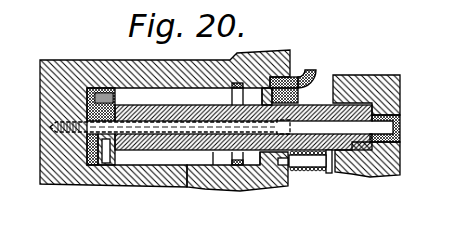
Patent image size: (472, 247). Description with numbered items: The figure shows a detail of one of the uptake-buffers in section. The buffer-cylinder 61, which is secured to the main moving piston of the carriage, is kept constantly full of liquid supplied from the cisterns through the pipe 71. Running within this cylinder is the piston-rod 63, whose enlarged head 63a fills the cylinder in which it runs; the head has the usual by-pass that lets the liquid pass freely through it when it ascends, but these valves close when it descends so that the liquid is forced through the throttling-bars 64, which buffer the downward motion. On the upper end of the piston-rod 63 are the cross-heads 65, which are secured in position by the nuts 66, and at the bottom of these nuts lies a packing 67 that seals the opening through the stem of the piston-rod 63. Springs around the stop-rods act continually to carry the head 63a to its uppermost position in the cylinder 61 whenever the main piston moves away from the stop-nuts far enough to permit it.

The buffer-cylinder 61 is at (103, 60).
The pipe 71 is at (313, 72).
The packing 67 is at (375, 116).
The nuts 66 is at (402, 119).
The cross-heads 65 is at (401, 164).
The piston-rod 63 is at (237, 185).
The enlarged head 63a is at (120, 157).
The throttling-bars 64 is at (187, 127).